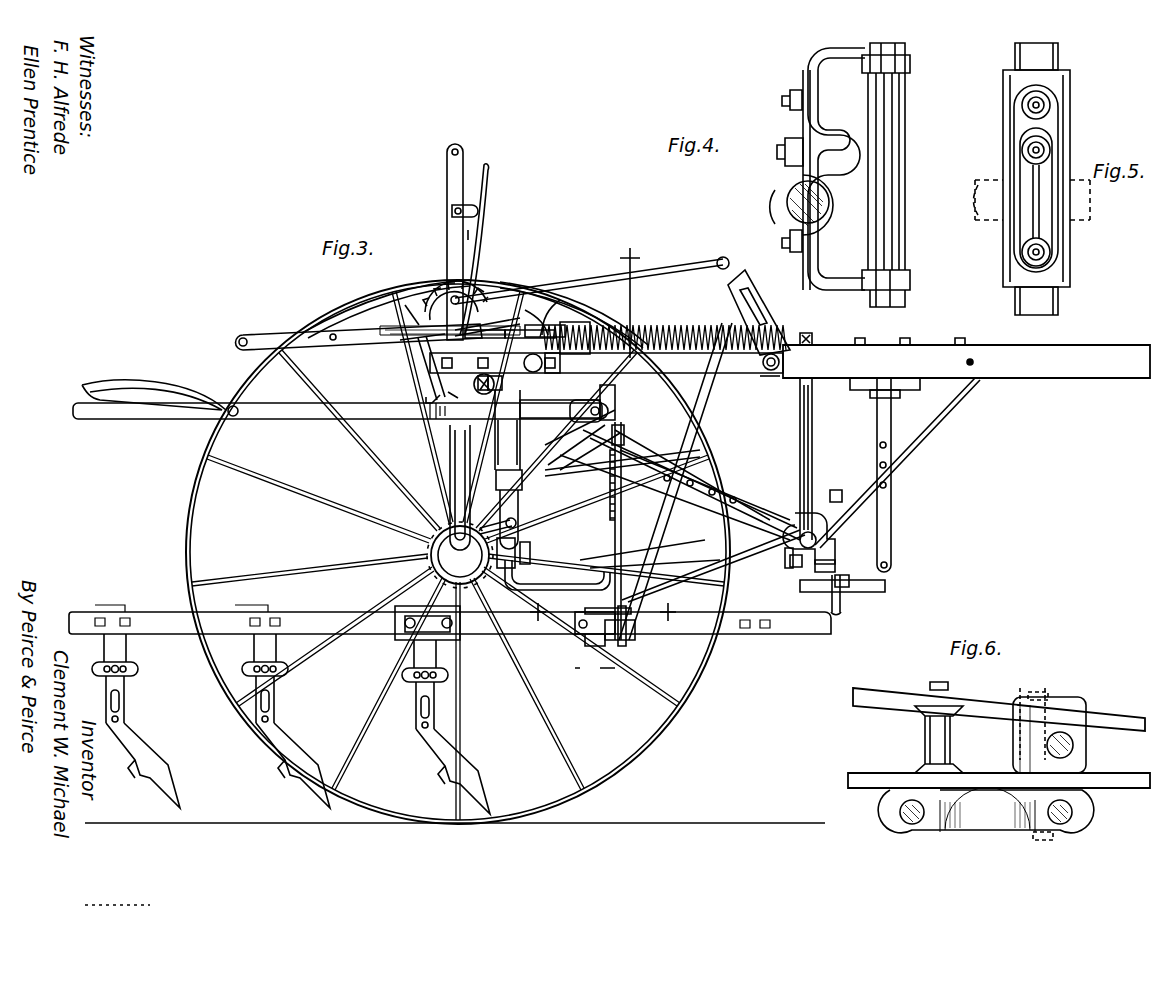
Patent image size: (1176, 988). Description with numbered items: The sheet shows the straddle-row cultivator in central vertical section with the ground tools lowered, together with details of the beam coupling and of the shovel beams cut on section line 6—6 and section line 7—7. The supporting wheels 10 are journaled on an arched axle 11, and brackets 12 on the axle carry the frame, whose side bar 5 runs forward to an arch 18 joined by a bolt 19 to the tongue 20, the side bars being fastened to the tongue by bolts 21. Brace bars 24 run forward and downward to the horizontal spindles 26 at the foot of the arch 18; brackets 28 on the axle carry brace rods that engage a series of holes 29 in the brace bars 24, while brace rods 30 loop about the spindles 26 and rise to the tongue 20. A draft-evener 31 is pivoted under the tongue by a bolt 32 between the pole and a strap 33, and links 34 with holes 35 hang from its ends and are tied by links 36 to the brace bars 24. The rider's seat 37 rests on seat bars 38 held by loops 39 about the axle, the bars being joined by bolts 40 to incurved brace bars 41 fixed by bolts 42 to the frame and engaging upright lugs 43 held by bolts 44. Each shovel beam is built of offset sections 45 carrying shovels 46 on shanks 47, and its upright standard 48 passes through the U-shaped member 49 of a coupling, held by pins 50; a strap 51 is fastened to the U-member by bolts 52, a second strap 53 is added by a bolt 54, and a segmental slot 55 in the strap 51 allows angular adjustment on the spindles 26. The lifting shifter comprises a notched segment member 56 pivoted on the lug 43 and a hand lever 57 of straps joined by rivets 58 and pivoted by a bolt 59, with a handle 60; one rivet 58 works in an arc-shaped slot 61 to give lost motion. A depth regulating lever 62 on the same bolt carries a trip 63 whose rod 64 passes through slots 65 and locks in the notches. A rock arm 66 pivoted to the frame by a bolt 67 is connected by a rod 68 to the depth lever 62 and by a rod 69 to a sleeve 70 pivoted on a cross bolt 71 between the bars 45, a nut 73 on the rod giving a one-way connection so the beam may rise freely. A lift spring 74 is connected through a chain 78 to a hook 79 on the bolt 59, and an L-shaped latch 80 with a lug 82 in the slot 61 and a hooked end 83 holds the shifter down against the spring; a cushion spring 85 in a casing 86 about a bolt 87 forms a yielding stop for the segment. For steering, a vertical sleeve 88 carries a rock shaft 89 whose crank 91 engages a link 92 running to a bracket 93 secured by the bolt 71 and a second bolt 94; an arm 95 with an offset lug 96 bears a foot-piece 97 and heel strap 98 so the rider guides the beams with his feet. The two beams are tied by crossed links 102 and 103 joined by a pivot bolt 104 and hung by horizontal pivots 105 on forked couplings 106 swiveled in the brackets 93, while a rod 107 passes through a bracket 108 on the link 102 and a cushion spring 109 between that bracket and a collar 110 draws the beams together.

In FIG. 3, the bar 5 is at (640, 352).
In FIG. 3, the section line 6 is at (603, 628).
In FIG. 3, the section line 7 is at (630, 292).
In FIG. 3, the supporting wheels 10 is at (192, 490).
In FIG. 3, the arched axle 11 is at (476, 388).
In FIG. 3, the brackets 12 is at (458, 388).
In FIG. 3, the arch 18 is at (812, 445).
In FIG. 3, the bolt 19 is at (806, 332).
In FIG. 3, the tongue 20 is at (966, 361).
In FIG. 3, the bolts 21 is at (975, 370).
In FIG. 3, the brace bars 24 is at (778, 528).
In FIG. 4, the horizontal spindles 26 is at (787, 205).
In FIG. 5, the horizontal spindles 26 is at (985, 220).
In FIG. 3, the brackets 28 is at (433, 540).
In FIG. 3, the holes 29 is at (728, 495).
In FIG. 3, the brace rods 30 is at (930, 425).
In FIG. 3, the draft-evener 31 is at (890, 380).
In FIG. 3, the bolt 32 is at (893, 345).
In FIG. 3, the strap 33 is at (895, 392).
In FIG. 3, the links 34 is at (890, 506).
In FIG. 3, the holes 35 is at (887, 448).
In FIG. 3, the links 36 is at (870, 582).
In FIG. 3, the rider's seat 37 is at (150, 388).
In FIG. 3, the seat bars 38 is at (325, 416).
In FIG. 3, the supporting loops 39 is at (445, 414).
In FIG. 3, the bolts 40 is at (612, 403).
In FIG. 3, the incurved brace bars 41 is at (580, 320).
In FIG. 3, the bolts 42 is at (605, 325).
In FIG. 3, the upright brackets or lugs 43 is at (543, 316).
In FIG. 3, the bolts 44 is at (505, 360).
In FIG. 3, the shovel beam sections 45 is at (338, 614).
In FIG. 6, the shovel beam sections 45 is at (885, 708).
In FIG. 3, the shovels 46 is at (142, 760).
In FIG. 3, the shanks 47 is at (126, 652).
In FIG. 3, the upright standards 48 is at (830, 598).
In FIG. 4, the upright standards 48 is at (895, 210).
In FIG. 5, the upright standards 48 is at (1055, 312).
In FIG. 3, the U-shaped member 49 is at (825, 535).
In FIG. 4, the U-shaped member 49 is at (828, 128).
In FIG. 5, the U-shaped member 49 is at (1055, 268).
In FIG. 3, the pins 50 is at (838, 490).
In FIG. 4, the pins 50 is at (878, 52).
In FIG. 5, the pins 50 is at (1058, 55).
In FIG. 3, the strap 51 is at (795, 565).
In FIG. 4, the strap 51 is at (820, 168).
In FIG. 5, the strap 51 is at (1050, 125).
In FIG. 3, the bolts 52 is at (792, 560).
In FIG. 4, the bolts 52 is at (790, 100).
In FIG. 5, the bolts 52 is at (1045, 90).
In FIG. 3, the second strap 53 is at (815, 568).
In FIG. 4, the second strap 53 is at (775, 190).
In FIG. 5, the second strap 53 is at (1050, 204).
In FIG. 4, the bolt 54 is at (778, 152).
In FIG. 5, the bolt 54 is at (1052, 150).
In FIG. 5, the segmental slot 55 is at (1050, 100).
In FIG. 3, the segment rack member 56 is at (500, 300).
In FIG. 3, the hand lever 57 is at (350, 330).
In FIG. 3, the rivets 58 is at (395, 334).
In FIG. 3, the bolt 59 is at (470, 285).
In FIG. 3, the handle 60 is at (250, 336).
In FIG. 3, the arc-shaped slot 61 is at (420, 300).
In FIG. 3, the depth regulating lever 62 is at (474, 212).
In FIG. 3, the trip 63 is at (480, 192).
In FIG. 3, the rod 64 is at (470, 235).
In FIG. 3, the slots 65 is at (452, 262).
In FIG. 3, the rock arm 66 is at (758, 306).
In FIG. 3, the bolt 67 is at (770, 368).
In FIG. 3, the connecting rod 68 is at (675, 275).
In FIG. 3, the link or rod 69 is at (700, 473).
In FIG. 6, the link or rod 69 is at (1075, 745).
In FIG. 6, the sleeve or bracket 70 is at (1020, 742).
In FIG. 3, the cross bolt 71 is at (630, 620).
In FIG. 6, the cross bolt 71 is at (1038, 692).
In FIG. 3, the nut 73 is at (632, 640).
In FIG. 3, the lift spring 74 is at (648, 340).
In FIG. 3, the chain 78 is at (522, 318).
In FIG. 3, the hook 79 is at (485, 325).
In FIG. 3, the latch 80 is at (420, 336).
In FIG. 3, the lug 82 is at (408, 312).
In FIG. 3, the hooked end 83 is at (432, 372).
In FIG. 3, the cushion spring 85 is at (490, 382).
In FIG. 3, the casing 86 is at (505, 384).
In FIG. 3, the supporting bolt 87 is at (515, 410).
In FIG. 3, the vertical sleeve 88 is at (503, 432).
In FIG. 3, the rock shaft 89 is at (510, 480).
In FIG. 3, the crank portion 91 is at (575, 578).
In FIG. 3, the link 92 is at (590, 612).
In FIG. 6, the link 92 is at (900, 812).
In FIG. 3, the bracket 93 is at (600, 636).
In FIG. 6, the bracket 93 is at (987, 810).
In FIG. 3, the bolt 94 is at (582, 636).
In FIG. 6, the bolt 94 is at (938, 684).
In FIG. 3, the arm 95 is at (518, 555).
In FIG. 3, the off-set lug 96 is at (538, 560).
In FIG. 3, the foot-piece 97 is at (514, 520).
In FIG. 3, the heel strap 98 is at (468, 525).
In FIG. 3, the link 102 is at (625, 545).
In FIG. 3, the link 103 is at (625, 420).
In FIG. 3, the pivot bolt 104 is at (625, 435).
In FIG. 3, the horizontal pivots 105 is at (640, 568).
In FIG. 3, the forked couplings 106 is at (655, 590).
In FIG. 6, the forked couplings 106 is at (1075, 808).
In FIG. 3, the rod 107 is at (580, 435).
In FIG. 3, the ear or bracket 108 is at (622, 515).
In FIG. 3, the cushion spring 109 is at (612, 455).
In FIG. 3, the collar 110 is at (576, 451).